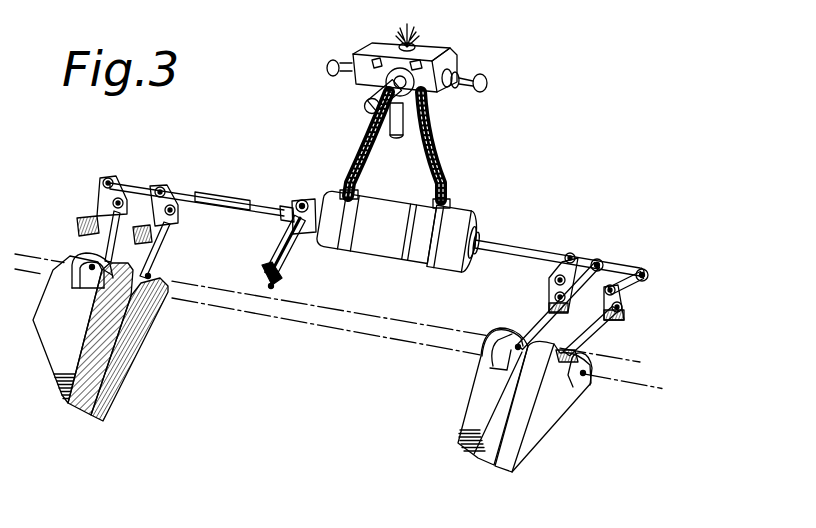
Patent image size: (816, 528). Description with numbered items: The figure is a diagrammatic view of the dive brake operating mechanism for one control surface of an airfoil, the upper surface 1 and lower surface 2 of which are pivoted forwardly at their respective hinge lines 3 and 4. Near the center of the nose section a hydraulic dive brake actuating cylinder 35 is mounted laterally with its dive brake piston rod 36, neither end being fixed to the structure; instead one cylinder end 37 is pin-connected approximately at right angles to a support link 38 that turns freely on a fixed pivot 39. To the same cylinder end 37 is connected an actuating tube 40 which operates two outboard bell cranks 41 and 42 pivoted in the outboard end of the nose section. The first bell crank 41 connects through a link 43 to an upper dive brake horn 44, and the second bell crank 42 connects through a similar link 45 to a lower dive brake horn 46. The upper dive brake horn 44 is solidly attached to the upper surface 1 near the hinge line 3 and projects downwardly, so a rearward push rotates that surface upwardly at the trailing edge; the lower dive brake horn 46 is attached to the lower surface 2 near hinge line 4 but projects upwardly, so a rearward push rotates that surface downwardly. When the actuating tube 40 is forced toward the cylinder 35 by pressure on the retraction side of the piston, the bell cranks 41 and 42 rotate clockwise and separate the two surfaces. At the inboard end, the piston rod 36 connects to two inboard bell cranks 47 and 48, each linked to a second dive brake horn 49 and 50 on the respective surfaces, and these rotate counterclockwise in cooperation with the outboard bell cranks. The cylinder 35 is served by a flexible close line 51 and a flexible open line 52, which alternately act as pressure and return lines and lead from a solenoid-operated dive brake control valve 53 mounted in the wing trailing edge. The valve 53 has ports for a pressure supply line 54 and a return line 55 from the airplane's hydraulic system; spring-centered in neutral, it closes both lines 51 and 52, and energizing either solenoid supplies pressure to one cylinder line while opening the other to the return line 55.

The upper surface 1 is at (280, 360).
The lower surface 2 is at (145, 338).
The hinge line 3 is at (190, 284).
The hinge line 4 is at (217, 307).
The hydraulic dive brake actuating cylinder 35 is at (374, 257).
The dive brake piston rod 36 is at (514, 244).
The cylinder end 37 is at (312, 237).
The support link 38 is at (293, 268).
The fixed pivot 39 is at (292, 284).
The actuating tube 40 is at (248, 198).
The first bell crank 41 is at (100, 182).
The second bell crank 42 is at (148, 188).
The link 43 is at (105, 248).
The upper dive brake horn 44 is at (78, 266).
The link 45 is at (174, 224).
The lower dive brake horn 46 is at (150, 272).
The inboard bell crank 47 is at (648, 283).
The inboard bell crank 48 is at (580, 266).
The second dive brake horn 49 is at (576, 370).
The second dive brake horn 50 is at (490, 358).
The close line 51 is at (448, 160).
The open line 52 is at (343, 167).
The solenoid-operated dive brake control valve 53 is at (447, 52).
The pressure supply line 54 is at (364, 106).
The return line 55 is at (392, 135).